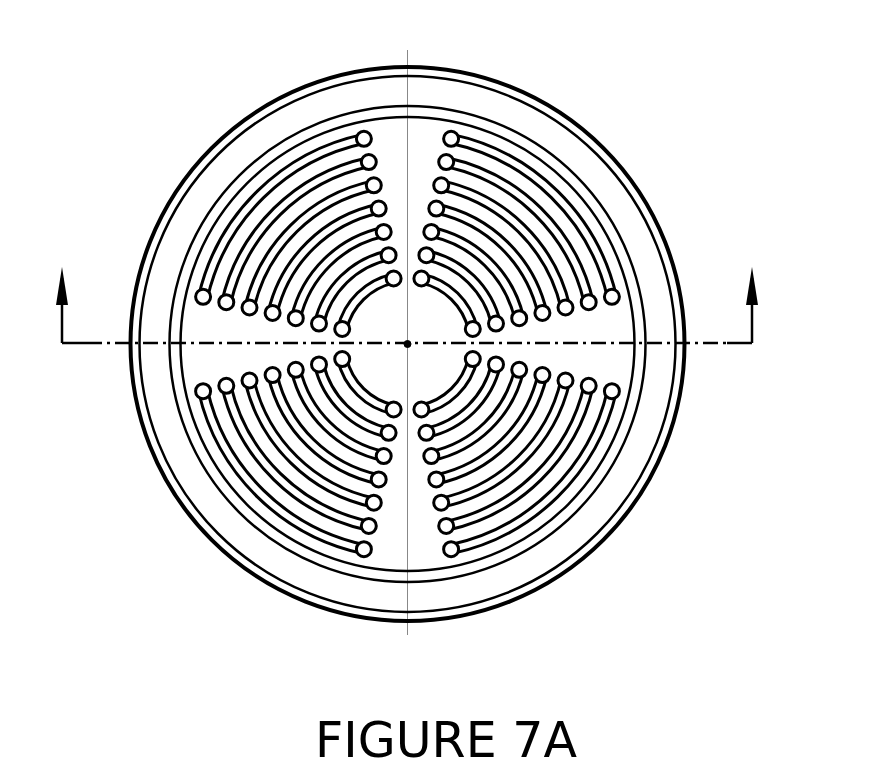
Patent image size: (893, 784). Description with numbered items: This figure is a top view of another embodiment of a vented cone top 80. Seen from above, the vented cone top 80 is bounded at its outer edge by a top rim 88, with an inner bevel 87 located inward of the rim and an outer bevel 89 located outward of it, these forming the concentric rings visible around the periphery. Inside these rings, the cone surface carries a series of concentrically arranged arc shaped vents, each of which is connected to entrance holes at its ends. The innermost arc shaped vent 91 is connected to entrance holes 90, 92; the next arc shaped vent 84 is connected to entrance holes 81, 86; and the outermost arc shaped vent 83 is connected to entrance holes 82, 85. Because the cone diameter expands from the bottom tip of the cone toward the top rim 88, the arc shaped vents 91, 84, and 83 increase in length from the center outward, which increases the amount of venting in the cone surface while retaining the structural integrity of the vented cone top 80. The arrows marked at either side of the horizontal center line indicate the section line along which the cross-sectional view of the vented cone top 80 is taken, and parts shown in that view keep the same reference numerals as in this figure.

The vented cone top 80 is at (165, 170).
The entrance hole 81 is at (242, 308).
The entrance hole 82 is at (196, 292).
The arc shaped vent 83 is at (245, 161).
The arc shaped vent 84 is at (285, 167).
The entrance hole 85 is at (368, 132).
The entrance hole 86 is at (374, 155).
The inner bevel 87 is at (575, 180).
The top rim 88 is at (618, 213).
The outer bevel 89 is at (665, 270).
The entrance hole 90 is at (372, 342).
The arc shaped vent 91 is at (394, 325).
The entrance hole 92 is at (419, 308).